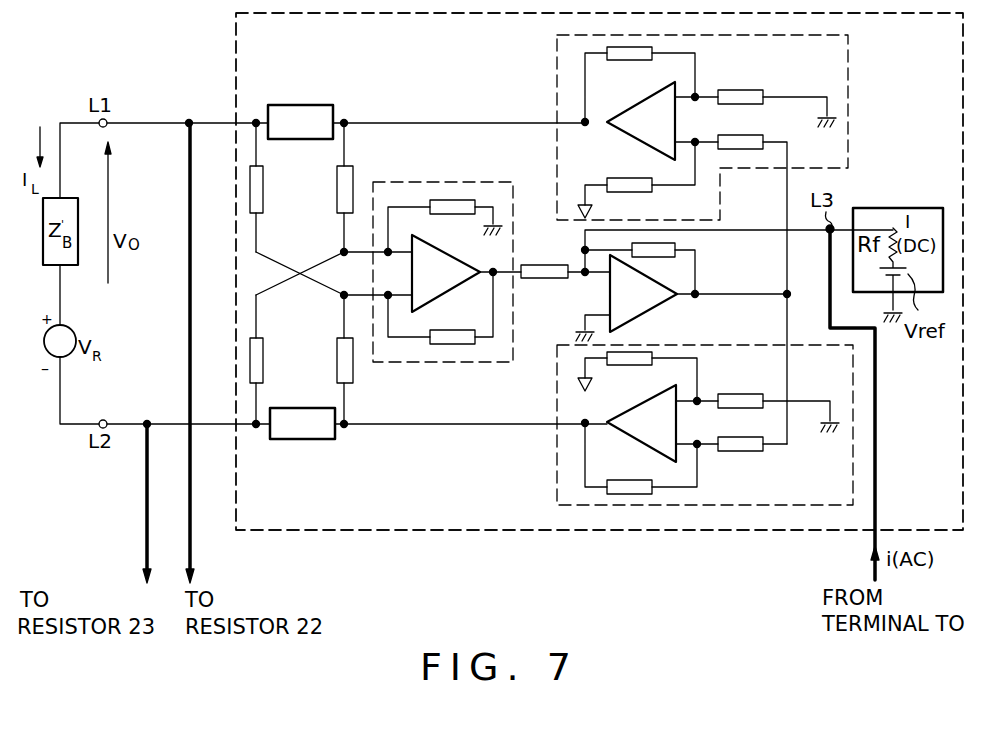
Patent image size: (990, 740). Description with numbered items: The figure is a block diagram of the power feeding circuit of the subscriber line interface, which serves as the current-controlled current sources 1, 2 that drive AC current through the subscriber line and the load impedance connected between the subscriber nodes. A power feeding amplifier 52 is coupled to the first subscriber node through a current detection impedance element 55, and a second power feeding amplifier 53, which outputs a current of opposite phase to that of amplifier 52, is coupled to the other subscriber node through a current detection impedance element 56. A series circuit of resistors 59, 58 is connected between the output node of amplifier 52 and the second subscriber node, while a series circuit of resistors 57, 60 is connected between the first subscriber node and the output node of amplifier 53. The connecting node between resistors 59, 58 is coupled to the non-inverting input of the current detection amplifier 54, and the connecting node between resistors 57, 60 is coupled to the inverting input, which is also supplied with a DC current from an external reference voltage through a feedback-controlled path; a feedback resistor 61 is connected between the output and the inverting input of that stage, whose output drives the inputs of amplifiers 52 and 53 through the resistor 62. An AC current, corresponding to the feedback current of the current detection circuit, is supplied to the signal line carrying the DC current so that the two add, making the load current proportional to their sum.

The current source 1 is at (379, 531).
The current source 2 is at (599, 271).
The power feeding amplifier 52 is at (850, 97).
The power feeding amplifier 53 is at (557, 461).
The current detection amplifier 54 is at (476, 363).
The current detection impedance element 55 is at (320, 106).
The current detection impedance element 56 is at (298, 408).
The resistor 57 is at (263, 180).
The resistor 58 is at (263, 346).
The resistor 59 is at (353, 180).
The resistor 60 is at (353, 380).
The feedback resistor 61 is at (676, 244).
The resistor 62 is at (545, 256).